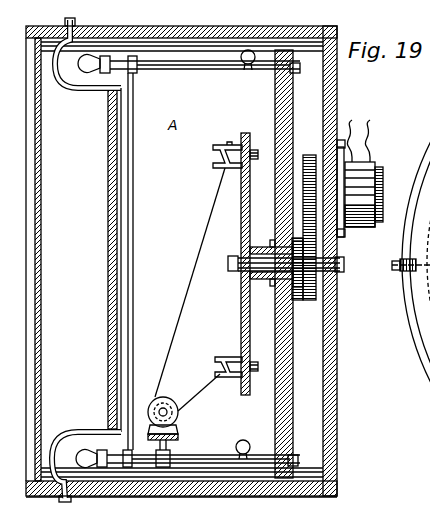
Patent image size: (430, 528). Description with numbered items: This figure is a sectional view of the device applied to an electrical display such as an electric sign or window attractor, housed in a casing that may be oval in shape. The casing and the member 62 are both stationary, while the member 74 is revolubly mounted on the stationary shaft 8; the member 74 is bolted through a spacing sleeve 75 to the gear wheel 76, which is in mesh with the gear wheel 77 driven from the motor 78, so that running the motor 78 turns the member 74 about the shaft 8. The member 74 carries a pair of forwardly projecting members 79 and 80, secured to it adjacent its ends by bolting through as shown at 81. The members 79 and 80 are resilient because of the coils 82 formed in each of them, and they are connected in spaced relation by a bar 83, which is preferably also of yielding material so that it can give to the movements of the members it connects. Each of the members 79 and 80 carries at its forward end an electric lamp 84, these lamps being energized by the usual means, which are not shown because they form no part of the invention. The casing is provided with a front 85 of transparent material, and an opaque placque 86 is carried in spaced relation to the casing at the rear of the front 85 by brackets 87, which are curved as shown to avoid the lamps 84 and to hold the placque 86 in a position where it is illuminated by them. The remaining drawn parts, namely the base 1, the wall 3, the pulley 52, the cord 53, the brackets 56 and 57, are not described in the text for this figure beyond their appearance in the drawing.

The base 1 is at (289, 494).
The housing 3 is at (334, 400).
The stationary shaft 8 is at (228, 265).
The pulley 52 is at (169, 396).
The cord 53 is at (180, 308).
The upper bracket 56 is at (213, 152).
The lower bracket 57 is at (220, 357).
The member 62 is at (242, 224).
The member 74 is at (275, 97).
The spacing sleeve 75 is at (303, 289).
The gear wheel 76 is at (309, 305).
The gear wheel 77 is at (311, 155).
The motor 78 is at (373, 162).
The forwardly projecting member 79 is at (158, 73).
The forwardly projecting member 80 is at (187, 453).
The bolting 81 is at (299, 72).
The coil 82 is at (246, 67).
The bar 83 is at (134, 258).
The electric lamp 84 is at (76, 73).
The front 85 is at (41, 314).
The opaque placque 86 is at (108, 258).
The bracket 87 is at (58, 84).